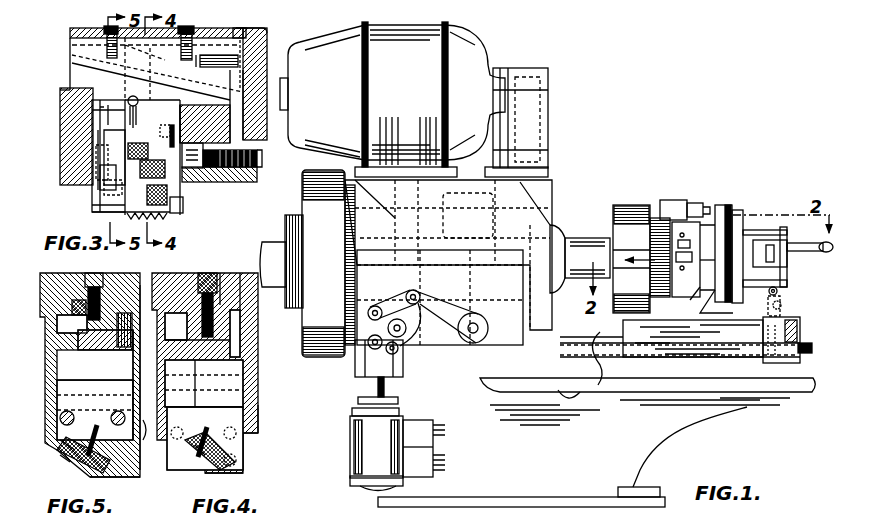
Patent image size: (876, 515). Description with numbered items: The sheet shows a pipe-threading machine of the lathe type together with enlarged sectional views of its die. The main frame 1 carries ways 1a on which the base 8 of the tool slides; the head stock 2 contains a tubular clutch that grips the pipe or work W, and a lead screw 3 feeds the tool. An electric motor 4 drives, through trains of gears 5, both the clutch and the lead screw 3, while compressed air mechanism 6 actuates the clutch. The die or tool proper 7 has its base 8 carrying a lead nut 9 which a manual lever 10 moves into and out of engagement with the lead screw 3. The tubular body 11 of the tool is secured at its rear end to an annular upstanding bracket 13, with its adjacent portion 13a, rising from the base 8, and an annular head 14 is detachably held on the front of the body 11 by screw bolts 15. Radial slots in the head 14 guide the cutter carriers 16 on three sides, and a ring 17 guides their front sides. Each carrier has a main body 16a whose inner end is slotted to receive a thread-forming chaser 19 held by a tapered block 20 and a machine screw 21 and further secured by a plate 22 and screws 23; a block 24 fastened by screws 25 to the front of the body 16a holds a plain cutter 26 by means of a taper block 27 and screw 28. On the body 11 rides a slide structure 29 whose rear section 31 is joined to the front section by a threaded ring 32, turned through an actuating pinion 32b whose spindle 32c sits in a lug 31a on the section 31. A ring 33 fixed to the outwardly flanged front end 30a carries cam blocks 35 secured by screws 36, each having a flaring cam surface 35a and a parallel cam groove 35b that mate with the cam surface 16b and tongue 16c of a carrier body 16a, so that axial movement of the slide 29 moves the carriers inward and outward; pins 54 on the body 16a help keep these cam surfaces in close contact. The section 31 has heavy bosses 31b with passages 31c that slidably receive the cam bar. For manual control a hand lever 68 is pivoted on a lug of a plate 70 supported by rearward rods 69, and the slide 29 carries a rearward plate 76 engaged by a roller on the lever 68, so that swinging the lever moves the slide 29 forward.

In FIG. 1, the main frame 1 is at (632, 430).
In FIG. 1, the ways 1a is at (587, 365).
In FIG. 1, the head stock 2 is at (550, 205).
In FIG. 1, the lead screw 3 is at (797, 357).
In FIG. 1, the electric motor 4 is at (470, 42).
In FIG. 1, the trains of gears 5 is at (545, 138).
In FIG. 1, the compressed air mechanism 6 is at (420, 350).
In FIG. 1, the die or tool 7 is at (722, 205).
In FIG. 1, the base 8 is at (675, 356).
In FIG. 1, the lead nut 9 is at (797, 330).
In FIG. 1, the manual lever 10 is at (760, 298).
In FIG. 3, the tubular body 11 is at (245, 172).
In FIG. 1, the tubular body 11 is at (718, 215).
In FIG. 1, the annular upstanding bracket 13 is at (738, 225).
In FIG. 1, the carriage plate extension 13a is at (381, 507).
In FIG. 3, the annular head 14 is at (230, 185).
In FIG. 5, the annular head 14 is at (145, 440).
In FIG. 4, the annular head 14 is at (258, 430).
In FIG. 1, the annular head 14 is at (358, 506).
In FIG. 3, the screw bolts 15 is at (258, 160).
In FIG. 3, the cutter carriers 16 is at (158, 85).
In FIG. 5, the cutter carriers 16 is at (90, 375).
In FIG. 4, the cutter carriers 16 is at (258, 386).
In FIG. 3, the main body of cutter carrier 16a is at (100, 96).
In FIG. 4, the main body of cutter carrier 16a is at (258, 410).
In FIG. 3, the cam surface 16b is at (150, 112).
In FIG. 5, the cam surface 16b is at (142, 295).
In FIG. 4, the cam surface 16b is at (258, 342).
In FIG. 3, the tongue 16c is at (212, 65).
In FIG. 5, the tongue 16c is at (67, 309).
In FIG. 4, the tongue 16c is at (181, 325).
In FIG. 3, the ring 17 is at (62, 151).
In FIG. 1, the ring 17 is at (613, 220).
In FIG. 3, the thread-forming chaser 19 is at (160, 210).
In FIG. 4, the thread-forming chaser 19 is at (243, 475).
In FIG. 3, the tapered block 20 is at (150, 215).
In FIG. 5, the tapered block 20 is at (92, 470).
In FIG. 4, the tapered block 20 is at (200, 468).
In FIG. 3, the machine screw 21 is at (170, 132).
In FIG. 4, the machine screw 21 is at (190, 462).
In FIG. 3, the plate 22 is at (183, 210).
In FIG. 3, the screws 23 is at (183, 190).
In FIG. 4, the screws 23 is at (236, 460).
In FIG. 3, the block 24 is at (95, 122).
In FIG. 5, the block 24 is at (140, 478).
In FIG. 3, the screws 25 is at (95, 166).
In FIG. 5, the screws 25 is at (95, 410).
In FIG. 3, the plain cutter 26 is at (100, 212).
In FIG. 5, the plain cutter 26 is at (110, 476).
In FIG. 3, the taper block 27 is at (105, 193).
In FIG. 5, the taper block 27 is at (70, 460).
In FIG. 3, the screw 28 is at (100, 183).
In FIG. 5, the screw 28 is at (68, 470).
In FIG. 1, the slide structure 29 is at (660, 218).
In FIG. 3, the outwardly flanged front end 30a is at (270, 40).
In FIG. 1, the outwardly flanged front end 30a is at (665, 200).
In FIG. 1, the rear section of slide 31 is at (695, 203).
In FIG. 1, the lug 31a is at (707, 207).
In FIG. 1, the bosses 31b is at (733, 275).
In FIG. 1, the passages 31c is at (333, 510).
In FIG. 1, the ring 32 is at (735, 215).
In FIG. 1, the actuating pinion 32b is at (680, 222).
In FIG. 1, the spindle 32c is at (712, 225).
In FIG. 3, the ring 33 is at (247, 30).
In FIG. 4, the ring 33 is at (228, 273).
In FIG. 1, the ring 33 is at (625, 205).
In FIG. 3, the cam blocks 35 is at (110, 62).
In FIG. 5, the cam blocks 35 is at (105, 338).
In FIG. 4, the cam blocks 35 is at (190, 273).
In FIG. 3, the cam surface 35a is at (142, 69).
In FIG. 5, the cam surface 35a is at (122, 313).
In FIG. 4, the cam surface 35a is at (211, 383).
In FIG. 3, the cam groove 35b is at (156, 74).
In FIG. 5, the cam groove 35b is at (78, 300).
In FIG. 4, the cam groove 35b is at (204, 383).
In FIG. 3, the screws 36 is at (104, 30).
In FIG. 5, the screws 36 is at (95, 273).
In FIG. 4, the screws 36 is at (207, 273).
In FIG. 3, the pins 54 is at (94, 154).
In FIG. 1, the manual lever 68 is at (787, 250).
In FIG. 1, the rods 69 is at (787, 235).
In FIG. 1, the plate 70 is at (792, 243).
In FIG. 1, the plate 76 is at (783, 227).
In FIG. 1, the workpiece W is at (583, 244).